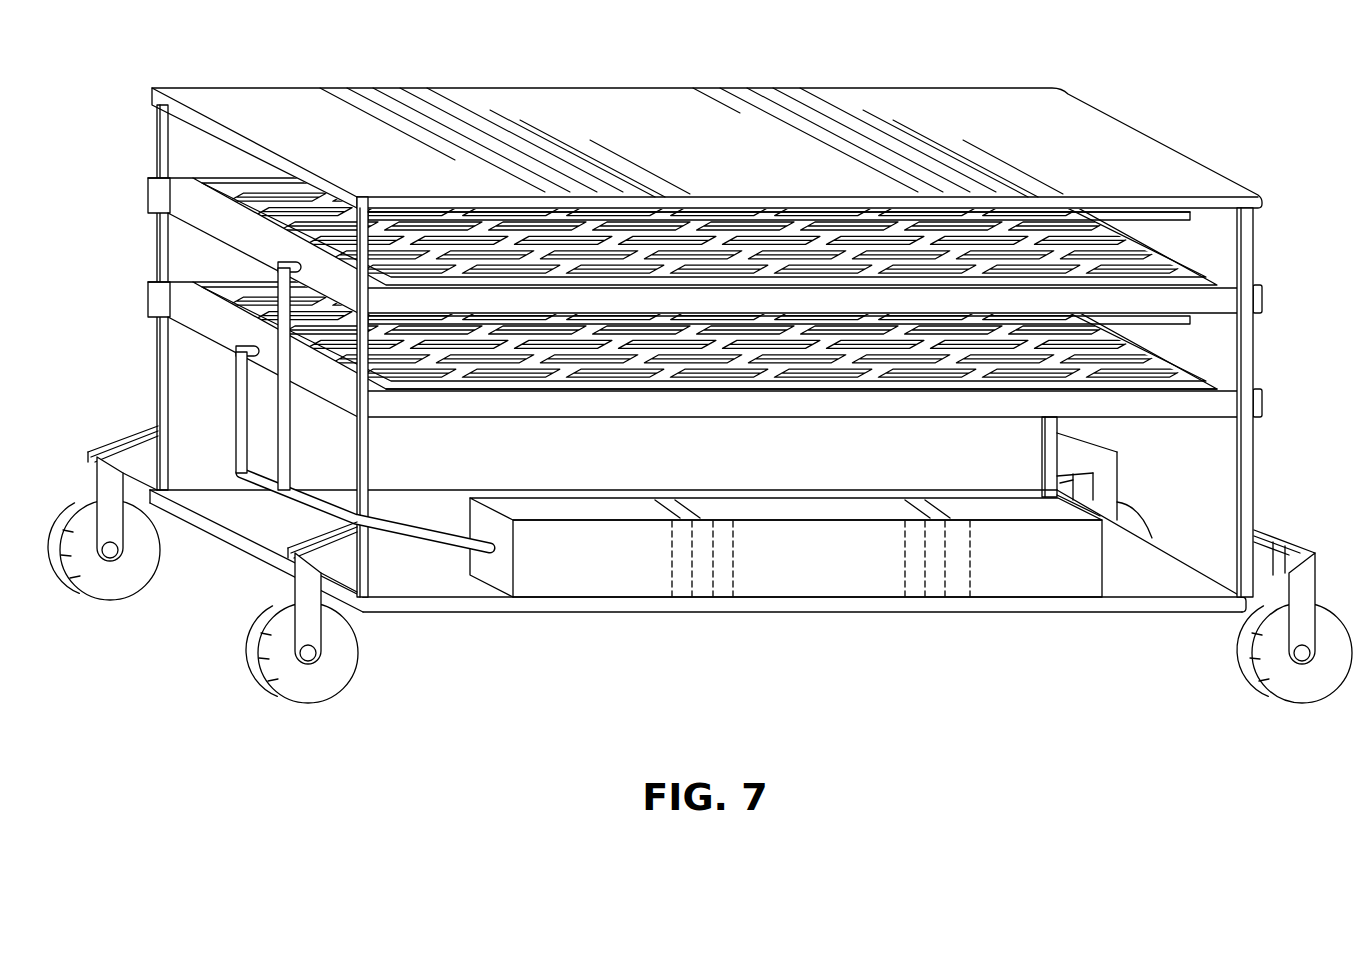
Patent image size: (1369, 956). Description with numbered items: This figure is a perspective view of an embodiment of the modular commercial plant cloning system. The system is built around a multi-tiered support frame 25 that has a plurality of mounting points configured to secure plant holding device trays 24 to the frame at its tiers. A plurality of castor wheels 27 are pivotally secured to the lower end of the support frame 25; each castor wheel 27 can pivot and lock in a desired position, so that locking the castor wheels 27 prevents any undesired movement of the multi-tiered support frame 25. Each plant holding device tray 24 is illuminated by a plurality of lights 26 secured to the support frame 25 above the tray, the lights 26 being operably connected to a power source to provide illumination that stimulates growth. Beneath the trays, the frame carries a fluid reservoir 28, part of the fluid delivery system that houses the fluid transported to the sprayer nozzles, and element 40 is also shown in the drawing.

The plant holding device tray 24 is at (1122, 346).
The multi-tiered support frame 25 is at (1298, 232).
The lights 26 is at (1124, 213).
The castor wheel 27 is at (270, 657).
The fluid reservoir 28 is at (806, 570).
The handles 40 is at (278, 336).